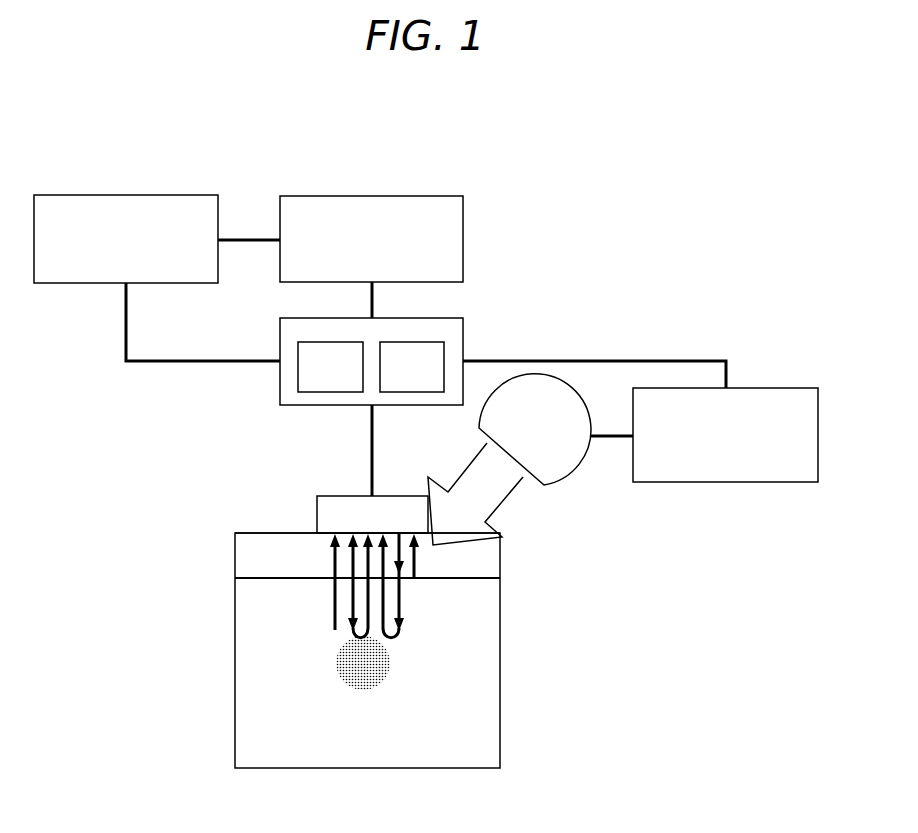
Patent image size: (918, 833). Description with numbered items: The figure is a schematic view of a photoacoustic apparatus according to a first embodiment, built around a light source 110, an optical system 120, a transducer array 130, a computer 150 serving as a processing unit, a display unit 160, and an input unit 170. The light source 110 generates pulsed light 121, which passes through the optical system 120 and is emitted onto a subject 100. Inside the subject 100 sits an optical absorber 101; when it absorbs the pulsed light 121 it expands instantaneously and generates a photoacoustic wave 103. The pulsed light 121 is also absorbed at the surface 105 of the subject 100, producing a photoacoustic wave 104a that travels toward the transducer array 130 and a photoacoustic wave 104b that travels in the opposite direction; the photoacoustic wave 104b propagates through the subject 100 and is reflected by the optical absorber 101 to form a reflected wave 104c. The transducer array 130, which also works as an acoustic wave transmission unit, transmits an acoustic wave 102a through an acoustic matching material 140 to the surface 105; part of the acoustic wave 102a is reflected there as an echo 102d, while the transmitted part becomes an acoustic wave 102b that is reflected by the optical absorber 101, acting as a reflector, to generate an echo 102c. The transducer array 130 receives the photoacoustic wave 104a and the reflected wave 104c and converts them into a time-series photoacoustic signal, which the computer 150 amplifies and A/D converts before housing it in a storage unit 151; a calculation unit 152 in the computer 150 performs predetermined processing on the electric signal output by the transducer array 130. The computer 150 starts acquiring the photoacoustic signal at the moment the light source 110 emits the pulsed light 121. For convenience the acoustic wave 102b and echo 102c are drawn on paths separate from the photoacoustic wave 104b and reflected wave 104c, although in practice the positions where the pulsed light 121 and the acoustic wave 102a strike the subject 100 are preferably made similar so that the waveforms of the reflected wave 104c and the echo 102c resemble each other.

The subject 100 is at (500, 742).
The optical absorber 101 is at (340, 660).
The acoustic wave 102a is at (415, 550).
The acoustic wave 102b is at (418, 597).
The echo 102c is at (418, 608).
The echo 102d is at (418, 570).
The photoacoustic wave 103 is at (335, 568).
The photoacoustic wave 104a is at (338, 558).
The photoacoustic wave 104b is at (338, 598).
The reflected wave 104c is at (338, 616).
The surface of the subject 105 is at (252, 577).
The light source 110 is at (708, 447).
The optical system 120 is at (573, 452).
The pulsed light 121 is at (502, 506).
The transducer array 130 is at (345, 496).
The acoustic matching material 140 is at (287, 532).
The computer 150 is at (463, 340).
The storage unit 151 is at (330, 350).
The calculation unit 152 is at (414, 350).
The display unit 160 is at (354, 251).
The input unit 170 is at (108, 251).